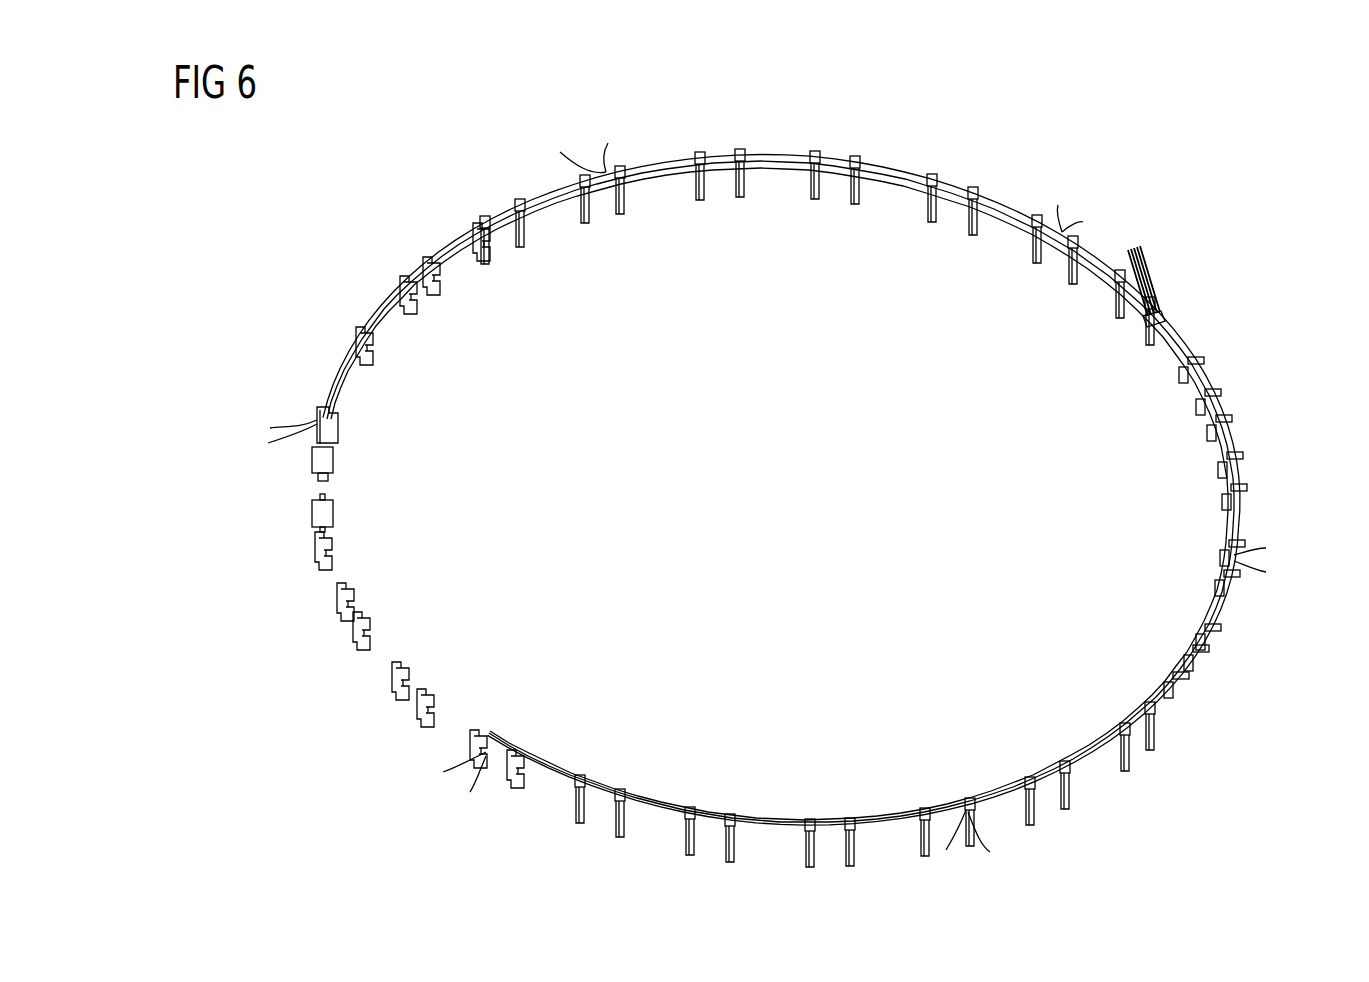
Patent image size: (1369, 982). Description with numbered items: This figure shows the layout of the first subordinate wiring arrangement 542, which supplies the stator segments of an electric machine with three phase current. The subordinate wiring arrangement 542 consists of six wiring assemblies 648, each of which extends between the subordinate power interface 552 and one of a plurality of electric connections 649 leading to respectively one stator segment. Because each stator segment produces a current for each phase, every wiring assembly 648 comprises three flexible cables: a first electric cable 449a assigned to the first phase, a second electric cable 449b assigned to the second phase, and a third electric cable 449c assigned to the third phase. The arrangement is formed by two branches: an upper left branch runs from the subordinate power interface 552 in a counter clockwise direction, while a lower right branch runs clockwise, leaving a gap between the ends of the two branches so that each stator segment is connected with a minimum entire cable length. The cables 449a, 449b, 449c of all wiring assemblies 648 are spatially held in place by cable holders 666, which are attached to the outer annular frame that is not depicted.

The first subordinate wiring arrangement 542 is at (382, 242).
The wiring assembly 648 is at (781, 152).
The cable holder 666 is at (482, 262).
The electric connection 649 is at (586, 138).
The subordinate power interface 552 is at (1186, 278).
The first electric cable 449a is at (312, 430).
The second electric cable 449b is at (275, 437).
The third electric cable 449c is at (303, 440).